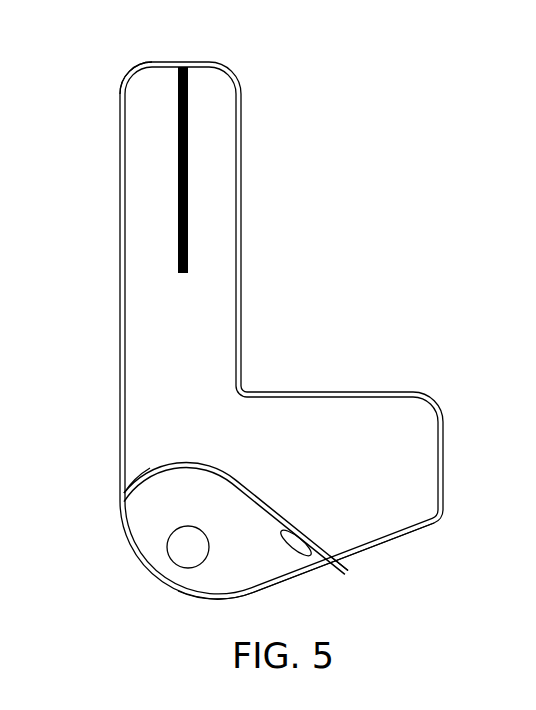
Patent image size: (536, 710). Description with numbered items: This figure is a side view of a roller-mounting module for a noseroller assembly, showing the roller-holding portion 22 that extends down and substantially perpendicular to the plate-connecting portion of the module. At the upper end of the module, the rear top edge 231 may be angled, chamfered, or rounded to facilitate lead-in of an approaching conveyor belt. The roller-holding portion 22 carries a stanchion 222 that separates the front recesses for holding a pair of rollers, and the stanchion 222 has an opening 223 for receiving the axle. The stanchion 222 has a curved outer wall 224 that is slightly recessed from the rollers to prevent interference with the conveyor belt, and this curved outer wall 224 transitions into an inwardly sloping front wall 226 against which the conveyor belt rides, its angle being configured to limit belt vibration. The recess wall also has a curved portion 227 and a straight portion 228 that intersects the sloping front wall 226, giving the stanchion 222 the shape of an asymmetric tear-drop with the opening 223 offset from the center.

The roller-holding portion 22 is at (313, 413).
The rear top edge 231 is at (125, 97).
The stanchion 222 is at (137, 530).
The opening 223 is at (182, 557).
The curved outer wall 224 is at (182, 593).
The sloping front wall 226 is at (307, 567).
The curved portion 227 is at (127, 495).
The straight portion 228 is at (336, 558).